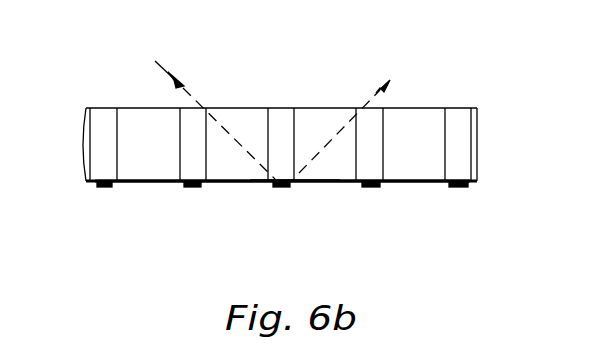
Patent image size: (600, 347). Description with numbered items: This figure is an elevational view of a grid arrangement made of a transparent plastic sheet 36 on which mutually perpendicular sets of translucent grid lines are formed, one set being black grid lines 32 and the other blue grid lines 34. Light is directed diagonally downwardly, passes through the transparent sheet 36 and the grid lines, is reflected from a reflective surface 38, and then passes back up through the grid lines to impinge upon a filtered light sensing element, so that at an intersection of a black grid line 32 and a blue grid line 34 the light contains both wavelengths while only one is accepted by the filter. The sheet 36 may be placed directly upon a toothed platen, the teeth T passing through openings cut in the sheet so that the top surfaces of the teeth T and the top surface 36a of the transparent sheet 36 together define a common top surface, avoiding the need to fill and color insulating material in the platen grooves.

The grid lines 32 is at (145, 185).
The grid lines 34 is at (368, 188).
The transparent plastic sheet 36 is at (302, 123).
The top surface 36a is at (455, 108).
The reflective surface 38 is at (327, 176).
The teeth T is at (328, 108).